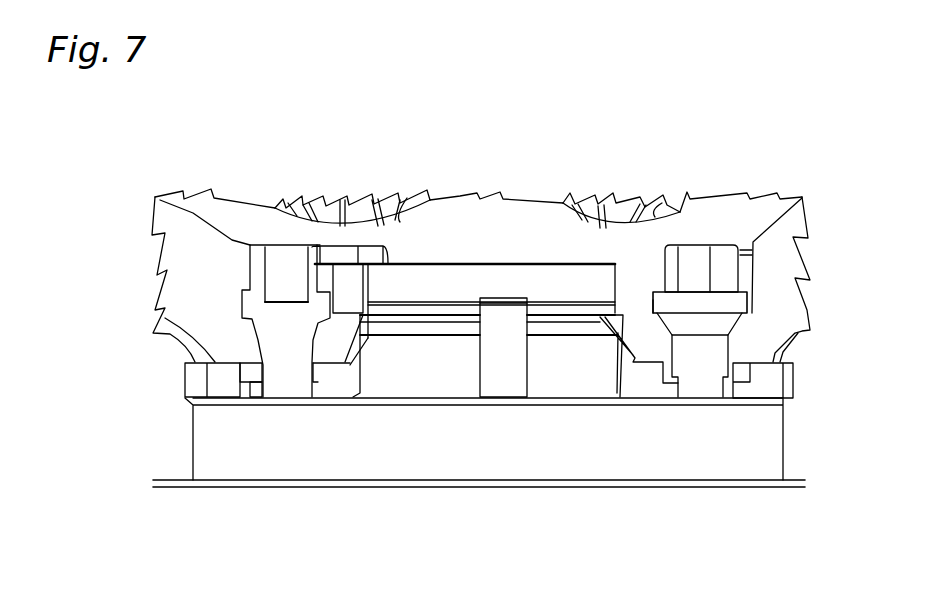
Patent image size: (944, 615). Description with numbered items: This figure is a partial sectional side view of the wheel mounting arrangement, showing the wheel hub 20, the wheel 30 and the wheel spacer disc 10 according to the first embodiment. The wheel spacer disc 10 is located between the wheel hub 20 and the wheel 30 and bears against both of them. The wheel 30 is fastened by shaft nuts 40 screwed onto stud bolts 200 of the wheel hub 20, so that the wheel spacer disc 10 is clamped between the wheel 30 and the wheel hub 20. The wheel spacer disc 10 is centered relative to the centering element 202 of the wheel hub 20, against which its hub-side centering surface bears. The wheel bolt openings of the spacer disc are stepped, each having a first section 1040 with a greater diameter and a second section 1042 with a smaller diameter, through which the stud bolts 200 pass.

The wheel spacer disc 10 is at (767, 383).
The wheel hub 20 is at (540, 457).
The wheel 30 is at (517, 217).
The shaft nut 40 is at (695, 267).
The stud bolt 200 is at (498, 365).
The centering element 202 is at (585, 367).
The first section 1040 is at (252, 389).
The second section 1042 is at (250, 372).